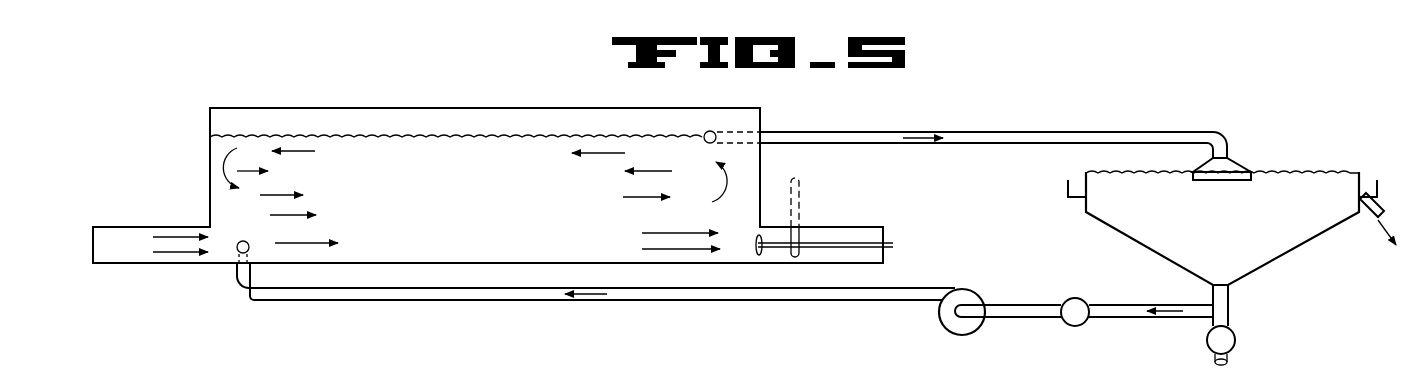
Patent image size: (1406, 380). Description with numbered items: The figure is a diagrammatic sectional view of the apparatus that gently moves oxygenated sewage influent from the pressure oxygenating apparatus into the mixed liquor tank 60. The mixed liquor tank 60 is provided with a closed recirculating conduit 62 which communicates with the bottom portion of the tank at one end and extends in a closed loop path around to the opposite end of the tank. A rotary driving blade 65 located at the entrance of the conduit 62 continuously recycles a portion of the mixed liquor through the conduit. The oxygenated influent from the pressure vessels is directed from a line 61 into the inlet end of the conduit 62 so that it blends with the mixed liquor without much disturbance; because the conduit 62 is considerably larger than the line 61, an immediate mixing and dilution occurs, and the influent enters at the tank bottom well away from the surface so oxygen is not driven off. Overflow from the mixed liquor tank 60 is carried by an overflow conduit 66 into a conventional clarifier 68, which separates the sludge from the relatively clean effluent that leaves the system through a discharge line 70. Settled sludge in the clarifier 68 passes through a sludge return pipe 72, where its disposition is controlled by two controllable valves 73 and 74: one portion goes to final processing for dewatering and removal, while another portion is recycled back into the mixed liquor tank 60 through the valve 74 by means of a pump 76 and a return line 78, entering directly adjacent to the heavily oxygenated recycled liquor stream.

The mixed liquor tank 60 is at (210, 158).
The line 61 is at (802, 183).
The closed recirculating conduit 62 is at (93, 243).
The rotary driving blade 65 is at (757, 240).
The conduit 66 is at (970, 135).
The clarifier 68 is at (1112, 237).
The discharge line 70 is at (1370, 215).
The sludge return pipe 72 is at (1235, 293).
The controllable valve 73 is at (1237, 333).
The controllable valve 74 is at (1074, 297).
The pump 76 is at (938, 318).
The return line 78 is at (542, 300).